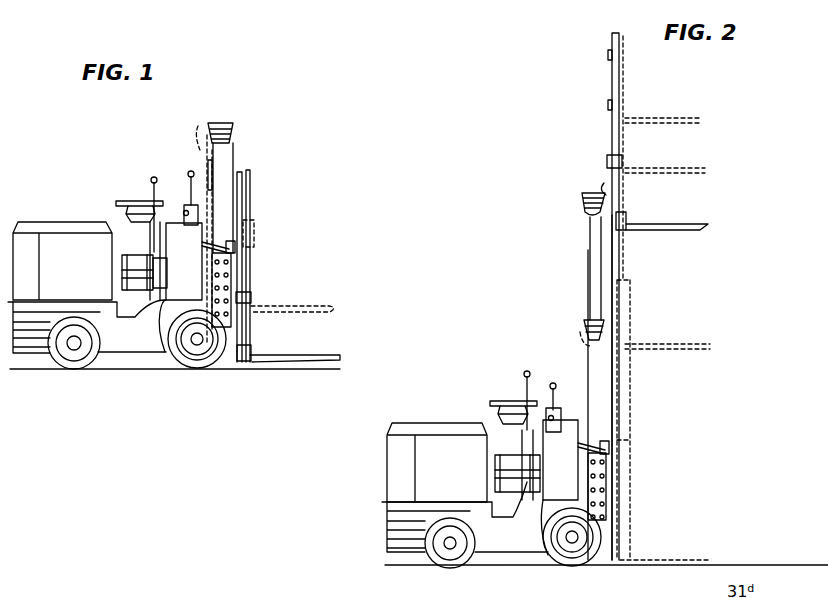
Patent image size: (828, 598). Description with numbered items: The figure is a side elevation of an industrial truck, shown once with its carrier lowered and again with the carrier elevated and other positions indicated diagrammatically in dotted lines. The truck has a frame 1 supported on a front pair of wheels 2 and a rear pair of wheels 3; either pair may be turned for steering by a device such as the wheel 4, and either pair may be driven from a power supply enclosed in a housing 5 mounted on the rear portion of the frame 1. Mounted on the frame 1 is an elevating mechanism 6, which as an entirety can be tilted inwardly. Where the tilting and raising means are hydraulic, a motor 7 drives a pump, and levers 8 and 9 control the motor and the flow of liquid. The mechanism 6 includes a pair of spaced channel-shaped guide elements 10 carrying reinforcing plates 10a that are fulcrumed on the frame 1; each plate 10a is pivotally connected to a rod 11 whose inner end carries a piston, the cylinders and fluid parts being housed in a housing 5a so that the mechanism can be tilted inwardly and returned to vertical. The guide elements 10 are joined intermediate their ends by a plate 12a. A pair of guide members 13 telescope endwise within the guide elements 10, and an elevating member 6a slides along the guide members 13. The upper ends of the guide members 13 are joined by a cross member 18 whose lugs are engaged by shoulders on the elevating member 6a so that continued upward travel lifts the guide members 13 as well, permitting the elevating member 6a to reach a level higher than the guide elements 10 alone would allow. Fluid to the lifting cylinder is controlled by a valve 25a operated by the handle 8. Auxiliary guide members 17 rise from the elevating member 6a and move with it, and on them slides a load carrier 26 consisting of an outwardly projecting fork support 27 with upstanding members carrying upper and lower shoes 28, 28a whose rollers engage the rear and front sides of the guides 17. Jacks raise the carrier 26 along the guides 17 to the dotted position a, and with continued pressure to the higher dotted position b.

In FIG. 1, the frame 1 is at (143, 338).
In FIG. 2, the frame 1 is at (527, 528).
In FIG. 1, the front pair of wheels 2 is at (177, 367).
In FIG. 1, the rear pair of wheels 3 is at (58, 367).
In FIG. 2, the rear pair of wheels 3 is at (442, 568).
In FIG. 1, the wheel 4 is at (122, 203).
In FIG. 2, the wheel 4 is at (505, 400).
In FIG. 1, the housing 5 is at (52, 261).
In FIG. 2, the housing 5 is at (388, 468).
In FIG. 1, the housing 5a is at (182, 250).
In FIG. 2, the housing 5a is at (559, 440).
In FIG. 1, the elevating mechanism 6 is at (267, 339).
In FIG. 2, the elevating member 6a is at (606, 184).
In FIG. 1, the motor 7 is at (122, 267).
In FIG. 2, the motor 7 is at (495, 463).
In FIG. 1, the lever 8 is at (152, 178).
In FIG. 2, the lever 8 is at (525, 372).
In FIG. 1, the lever 9 is at (189, 172).
In FIG. 2, the lever 9 is at (556, 387).
In FIG. 1, the guide elements 10 is at (228, 149).
In FIG. 2, the guide elements 10 is at (600, 431).
In FIG. 1, the reinforcing plates 10a is at (214, 297).
In FIG. 2, the reinforcing plates 10a is at (588, 487).
In FIG. 2, the rod 11 is at (578, 450).
In FIG. 2, the plate 12a is at (584, 348).
In FIG. 2, the guide members 13 is at (592, 270).
In FIG. 1, the auxiliary guide members 17 is at (243, 187).
In FIG. 2, the auxiliary guide members 17 is at (612, 82).
In FIG. 1, the cross member 18 is at (216, 122).
In FIG. 2, the cross member 18 is at (582, 201).
In FIG. 1, the valve 25a is at (202, 260).
In FIG. 1, the load carrier 26 is at (312, 358).
In FIG. 2, the load carrier 26 is at (666, 219).
In FIG. 2, the support 27 is at (676, 230).
In FIG. 1, the upper shoe 28 is at (251, 297).
In FIG. 2, the upper shoe 28 is at (623, 161).
In FIG. 1, the lower shoe 28a is at (244, 362).
In FIG. 1, the dotted-line position a is at (312, 307).
In FIG. 2, the dotted-line position a is at (695, 173).
In FIG. 2, the dotted-line position b is at (690, 118).